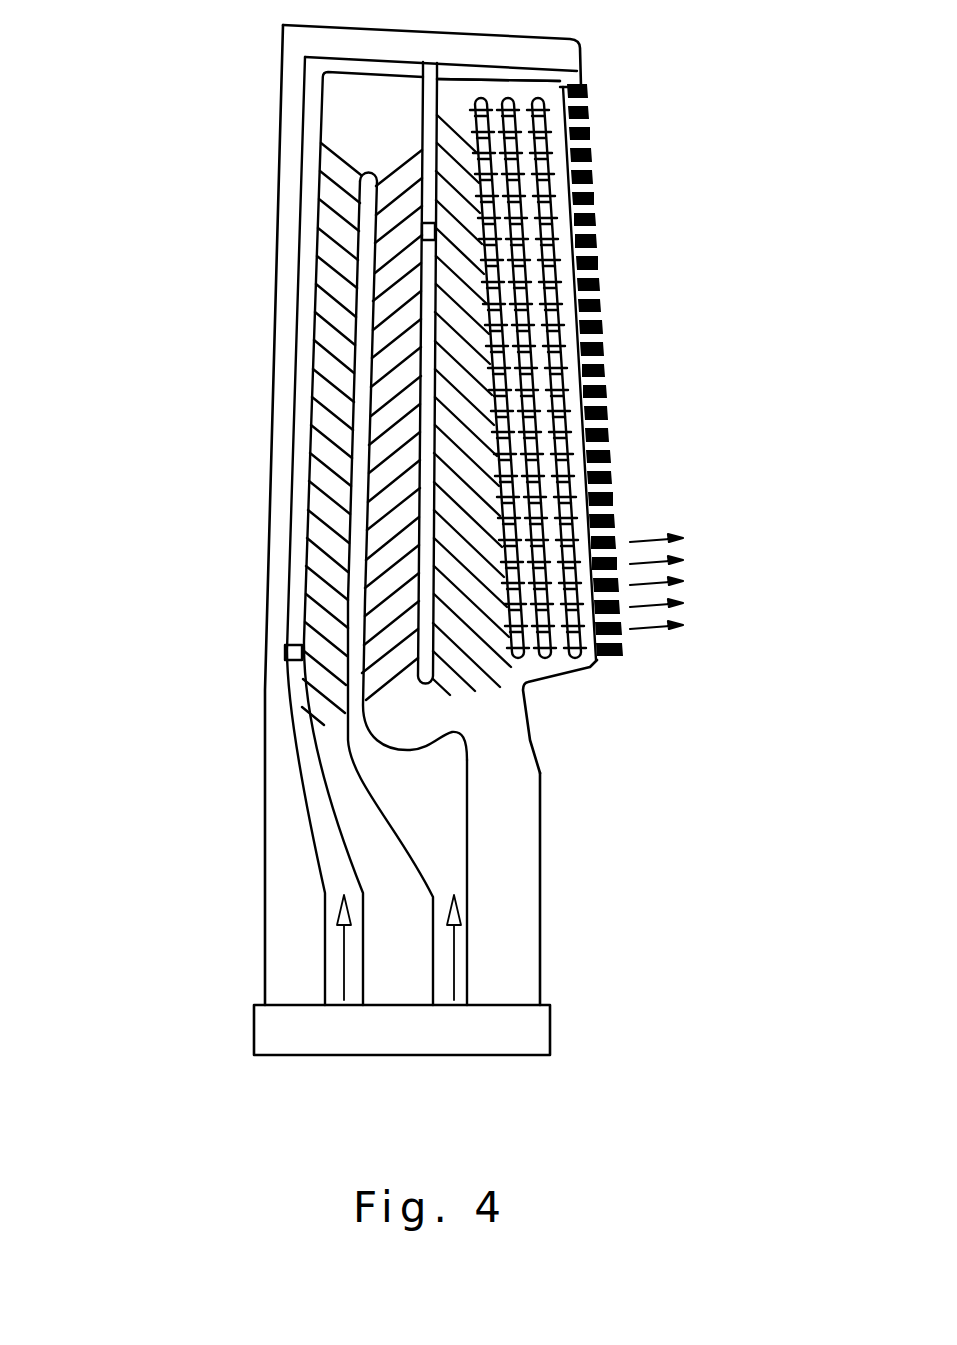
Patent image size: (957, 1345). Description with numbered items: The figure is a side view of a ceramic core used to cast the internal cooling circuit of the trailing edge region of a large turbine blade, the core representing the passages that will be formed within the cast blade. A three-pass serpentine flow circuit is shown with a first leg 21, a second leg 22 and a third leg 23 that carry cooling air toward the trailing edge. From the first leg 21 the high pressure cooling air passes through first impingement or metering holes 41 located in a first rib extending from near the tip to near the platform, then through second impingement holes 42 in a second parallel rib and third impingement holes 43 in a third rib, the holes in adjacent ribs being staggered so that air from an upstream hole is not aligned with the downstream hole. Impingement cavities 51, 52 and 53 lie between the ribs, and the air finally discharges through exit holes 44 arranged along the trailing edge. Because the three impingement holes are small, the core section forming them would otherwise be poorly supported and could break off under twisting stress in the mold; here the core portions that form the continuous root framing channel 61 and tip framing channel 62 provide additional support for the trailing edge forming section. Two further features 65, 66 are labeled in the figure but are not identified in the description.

The first leg 21 is at (340, 237).
The second leg 22 is at (400, 322).
The third leg 23 is at (465, 378).
The first impingement holes 41 is at (507, 308).
The second impingement holes 42 is at (530, 382).
The third impingement holes 43 is at (562, 445).
The exit holes 44 is at (590, 325).
The first impingement cavity 51 is at (495, 143).
The second impingement cavity 52 is at (528, 173).
The third impingement cavity 53 is at (567, 243).
The root framing channel 61 is at (557, 667).
The tip framing channel 62 is at (512, 89).
The first sensor 65 is at (293, 652).
The second sensor 66 is at (433, 232).